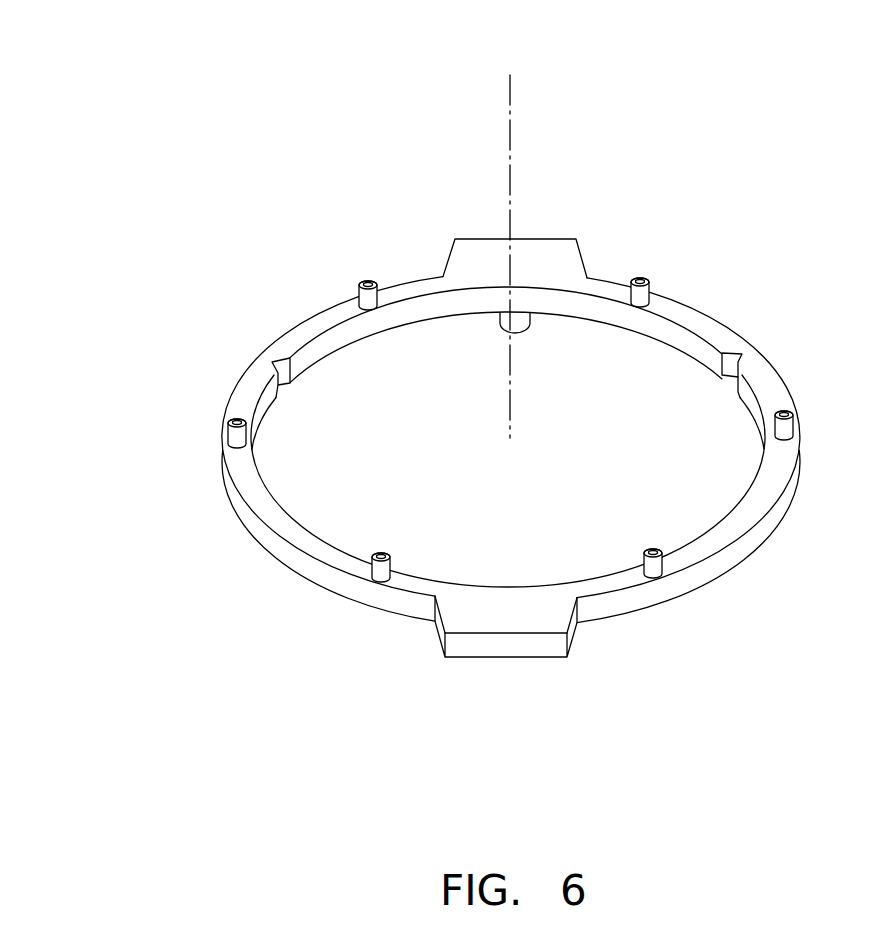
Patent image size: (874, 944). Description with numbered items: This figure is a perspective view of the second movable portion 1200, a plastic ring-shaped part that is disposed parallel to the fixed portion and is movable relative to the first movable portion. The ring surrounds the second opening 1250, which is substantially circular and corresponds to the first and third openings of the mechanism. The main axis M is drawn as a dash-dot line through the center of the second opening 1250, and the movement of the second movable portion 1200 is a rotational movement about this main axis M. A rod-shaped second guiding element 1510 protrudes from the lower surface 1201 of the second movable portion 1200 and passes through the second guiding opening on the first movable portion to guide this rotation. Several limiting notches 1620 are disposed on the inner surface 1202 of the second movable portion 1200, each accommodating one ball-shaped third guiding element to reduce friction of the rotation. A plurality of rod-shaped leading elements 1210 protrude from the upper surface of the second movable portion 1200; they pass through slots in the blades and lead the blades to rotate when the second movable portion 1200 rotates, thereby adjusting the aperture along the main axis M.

The second movable portion 1200 is at (72, 47).
The lower surface 1201 is at (457, 315).
The inner surface 1202 is at (683, 344).
The leading elements 1210 is at (367, 281).
The second opening 1250 is at (283, 510).
The second guiding element 1510 is at (520, 323).
The limiting notches 1620 is at (282, 363).
The main axis M is at (509, 239).